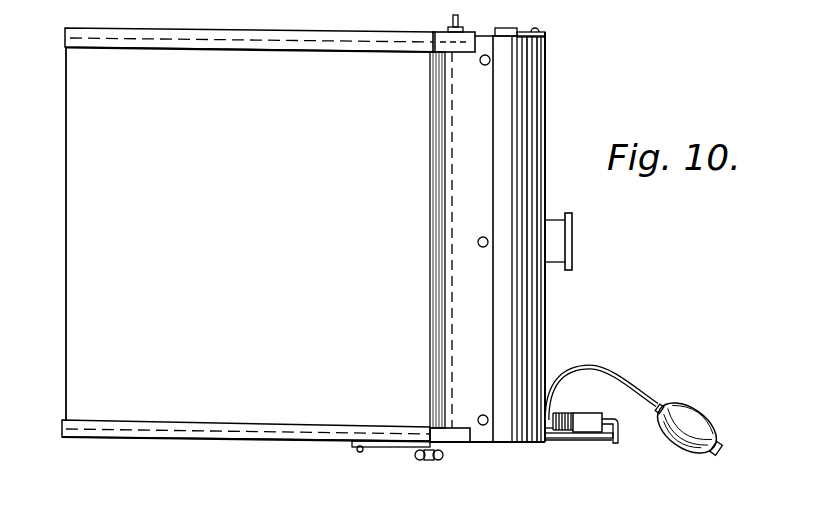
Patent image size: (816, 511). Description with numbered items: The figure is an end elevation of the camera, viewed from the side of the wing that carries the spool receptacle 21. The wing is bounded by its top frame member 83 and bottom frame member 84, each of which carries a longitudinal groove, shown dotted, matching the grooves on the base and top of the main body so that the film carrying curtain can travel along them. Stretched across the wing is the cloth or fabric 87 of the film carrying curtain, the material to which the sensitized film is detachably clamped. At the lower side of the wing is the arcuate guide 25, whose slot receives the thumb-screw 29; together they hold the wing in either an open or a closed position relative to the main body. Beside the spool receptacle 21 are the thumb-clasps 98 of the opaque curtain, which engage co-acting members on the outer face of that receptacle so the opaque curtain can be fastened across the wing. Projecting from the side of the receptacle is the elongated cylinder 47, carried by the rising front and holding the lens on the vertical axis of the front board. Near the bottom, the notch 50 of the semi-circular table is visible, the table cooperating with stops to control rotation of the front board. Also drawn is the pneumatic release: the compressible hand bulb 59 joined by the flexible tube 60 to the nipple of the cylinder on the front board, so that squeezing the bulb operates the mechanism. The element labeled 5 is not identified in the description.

The base frame 5 is at (598, 436).
The spool receptacle 21 is at (538, 179).
The guide 25 is at (378, 448).
The thumb-screw 29 is at (423, 462).
The elongated cylinder 47 is at (557, 240).
The notch 50 is at (573, 438).
The compressible hand bulb 59 is at (703, 399).
The flexible tube 60 is at (630, 384).
The top frame member 83 is at (257, 52).
The bottom frame member 84 is at (238, 424).
The cloth or fabric 87 is at (248, 234).
The thumb-clasps 98 is at (484, 65).